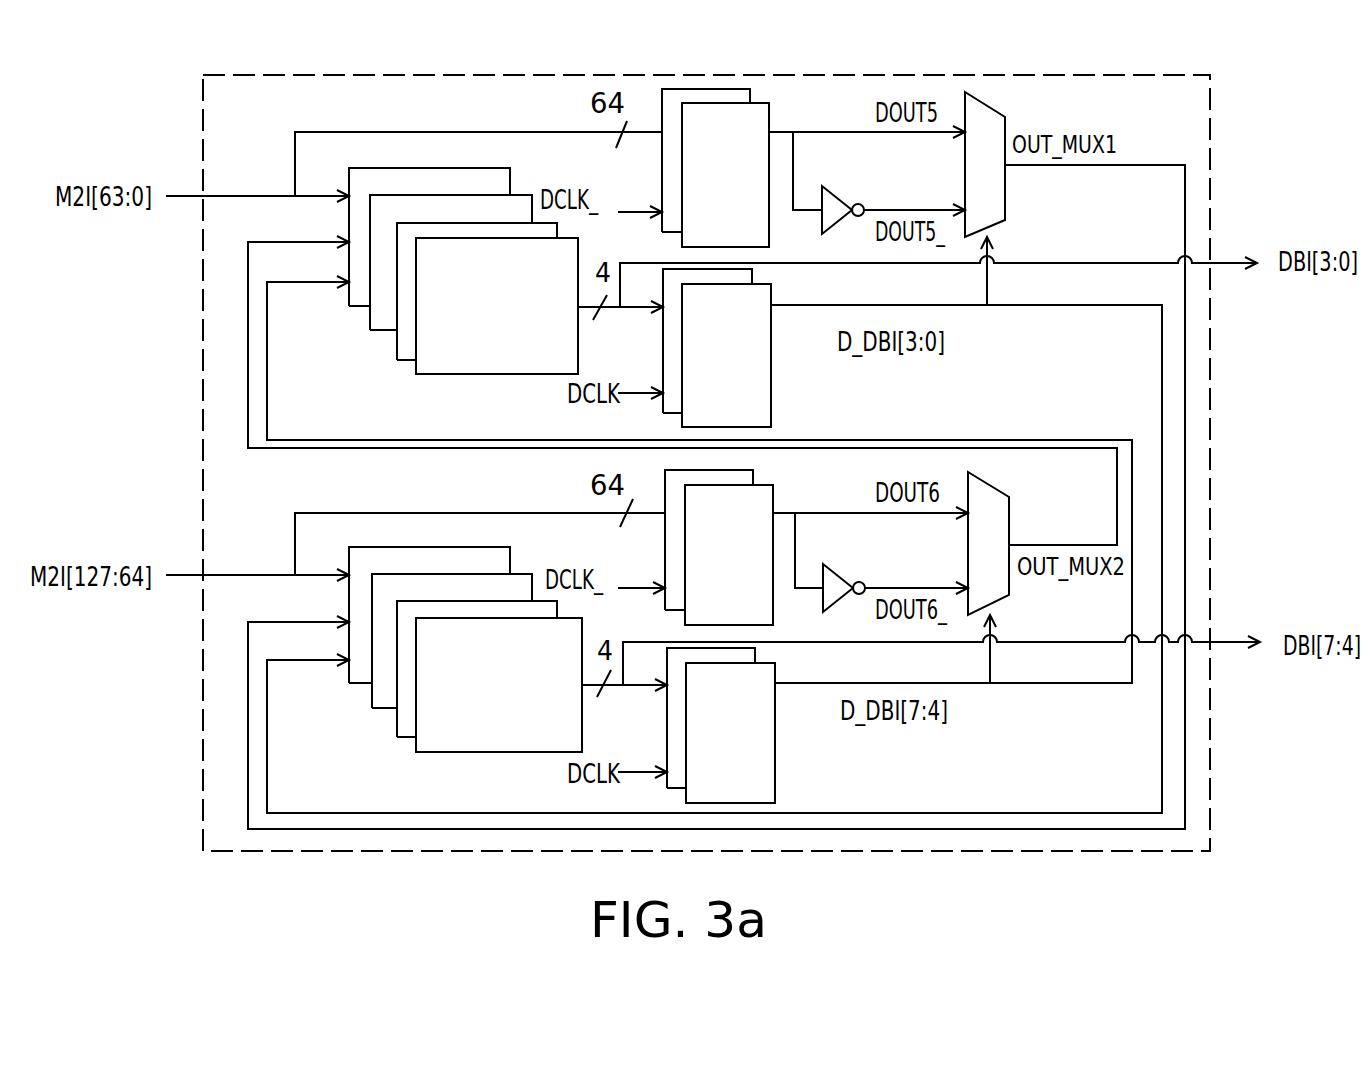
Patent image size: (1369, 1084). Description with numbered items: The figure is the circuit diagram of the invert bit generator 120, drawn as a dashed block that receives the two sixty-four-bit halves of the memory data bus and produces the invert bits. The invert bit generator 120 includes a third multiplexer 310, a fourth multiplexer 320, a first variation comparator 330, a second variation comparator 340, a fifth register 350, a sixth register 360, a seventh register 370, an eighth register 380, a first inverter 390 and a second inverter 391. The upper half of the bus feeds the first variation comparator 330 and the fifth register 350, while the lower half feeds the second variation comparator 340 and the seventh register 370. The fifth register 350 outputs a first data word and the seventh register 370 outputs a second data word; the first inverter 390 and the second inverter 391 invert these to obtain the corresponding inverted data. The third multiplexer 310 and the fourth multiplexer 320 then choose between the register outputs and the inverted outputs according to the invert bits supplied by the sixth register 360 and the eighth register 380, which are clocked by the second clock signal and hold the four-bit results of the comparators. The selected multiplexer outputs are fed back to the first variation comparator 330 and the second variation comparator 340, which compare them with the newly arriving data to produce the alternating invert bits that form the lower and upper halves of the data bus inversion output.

The invert bit generator 120 is at (203, 355).
The third multiplexer 310 is at (1007, 194).
The fourth multiplexer 320 is at (1011, 586).
The first variation comparator 330 is at (483, 376).
The second variation comparator 340 is at (487, 754).
The fifth register 350 is at (758, 92).
The sixth register 360 is at (773, 388).
The seventh register 370 is at (760, 473).
The eighth register 380 is at (777, 764).
The first inverter 390 is at (836, 192).
The second inverter 391 is at (838, 573).